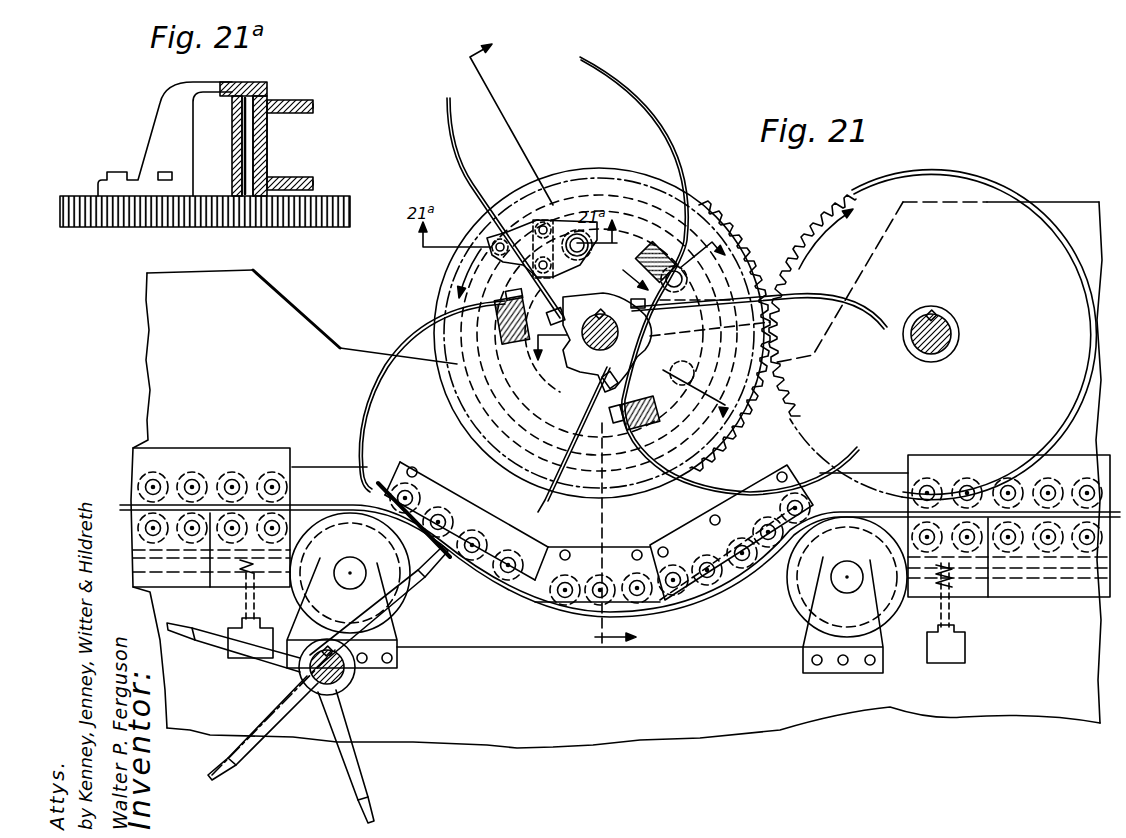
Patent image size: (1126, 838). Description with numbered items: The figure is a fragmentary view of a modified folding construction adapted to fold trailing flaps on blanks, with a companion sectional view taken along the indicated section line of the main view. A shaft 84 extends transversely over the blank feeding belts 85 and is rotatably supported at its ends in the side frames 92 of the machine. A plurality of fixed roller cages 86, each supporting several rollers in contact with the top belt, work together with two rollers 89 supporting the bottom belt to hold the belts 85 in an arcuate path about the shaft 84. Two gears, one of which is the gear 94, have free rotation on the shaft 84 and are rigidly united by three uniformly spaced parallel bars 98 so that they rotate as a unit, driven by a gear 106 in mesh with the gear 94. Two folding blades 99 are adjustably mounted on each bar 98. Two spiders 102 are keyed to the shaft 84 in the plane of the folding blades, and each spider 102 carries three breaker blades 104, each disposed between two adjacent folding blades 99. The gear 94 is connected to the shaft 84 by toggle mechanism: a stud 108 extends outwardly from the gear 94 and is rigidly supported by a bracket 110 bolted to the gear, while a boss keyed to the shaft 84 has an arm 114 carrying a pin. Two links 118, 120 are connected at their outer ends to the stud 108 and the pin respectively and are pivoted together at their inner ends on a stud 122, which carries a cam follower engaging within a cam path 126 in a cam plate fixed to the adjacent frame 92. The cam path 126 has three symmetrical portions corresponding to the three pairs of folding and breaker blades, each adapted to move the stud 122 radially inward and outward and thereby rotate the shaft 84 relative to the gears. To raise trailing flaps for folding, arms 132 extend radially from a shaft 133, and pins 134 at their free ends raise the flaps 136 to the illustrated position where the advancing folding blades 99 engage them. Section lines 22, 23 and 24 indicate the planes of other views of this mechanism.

In FIG. 21, the section line 22- 22 is at (567, 342).
In FIG. 21, the section line 23- 23 is at (628, 385).
In FIG. 21, the section line 24- 24 is at (668, 270).
In FIG. 21, the shaft 84 is at (606, 381).
In FIG. 21, the blank feeding belts 85 is at (313, 507).
In FIG. 21, the fixed roller cages 86 is at (438, 487).
In FIG. 21, the rollers 89 is at (403, 610).
In FIG. 21, the side frames 92 is at (280, 304).
In FIG. 21A, the gear 94 is at (150, 228).
In FIG. 21, the gear 94 is at (700, 204).
In FIG. 21, the bars 98 is at (498, 326).
In FIG. 21, the folding blades 99 is at (638, 86).
In FIG. 21, the spiders 102 is at (597, 298).
In FIG. 21, the breaker blades 104 is at (458, 161).
In FIG. 21, the gear 106 is at (837, 203).
In FIG. 21A, the stud 108 is at (250, 147).
In FIG. 21A, the bracket 110 is at (173, 106).
In FIG. 21, the arm 114 is at (662, 432).
In FIG. 21A, the link 118 is at (307, 104).
In FIG. 21, the link 118 is at (642, 244).
In FIG. 21, the link 120 is at (770, 321).
In FIG. 21, the stud 122 is at (688, 285).
In FIG. 21, the cam path 126 is at (590, 200).
In FIG. 21, the arms 132 is at (210, 638).
In FIG. 21, the shaft 133 is at (317, 673).
In FIG. 21, the pins 134 is at (178, 626).
In FIG. 21, the flaps 136 is at (393, 474).